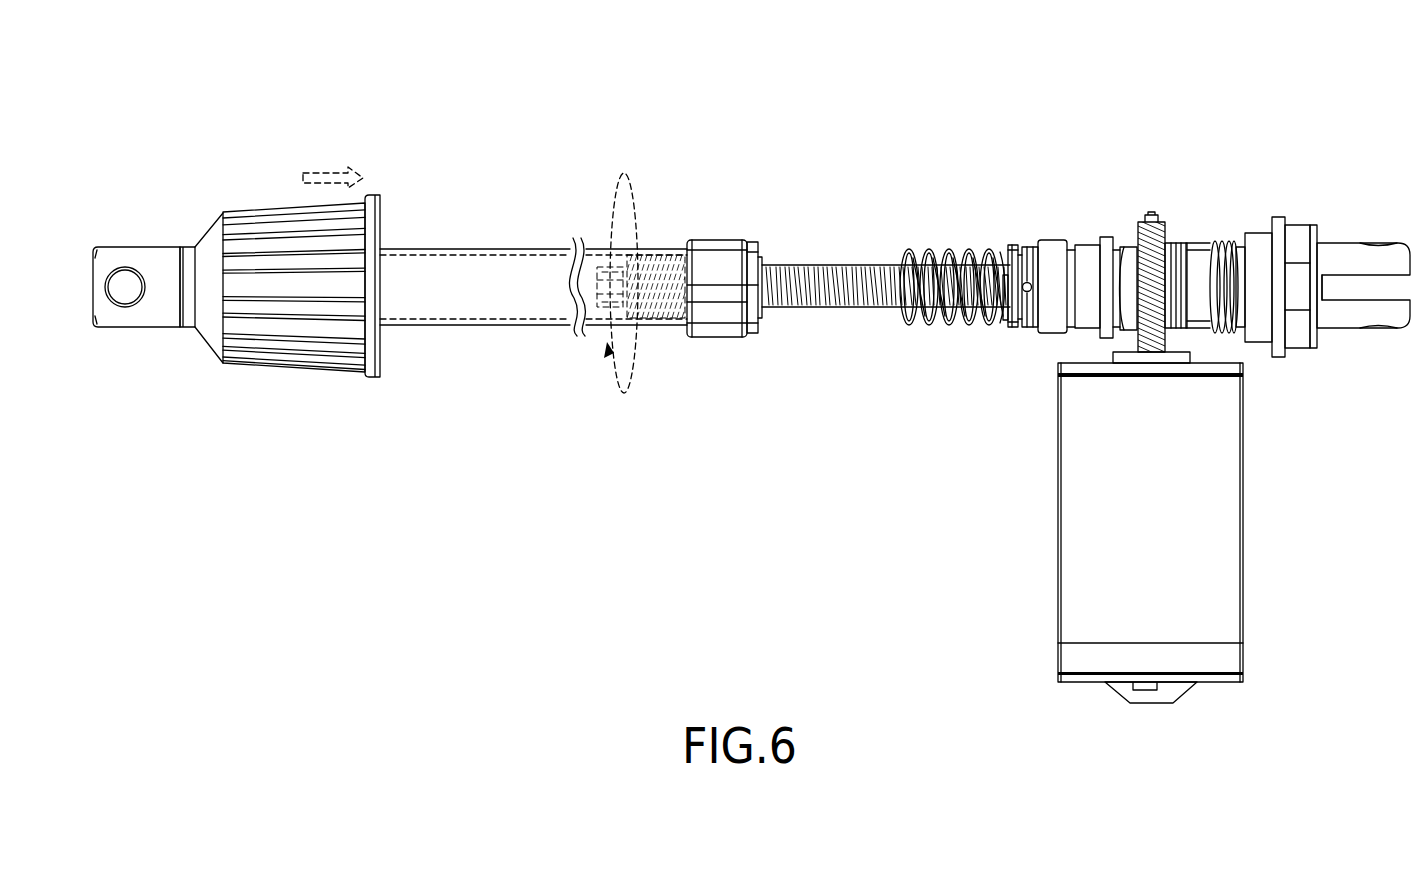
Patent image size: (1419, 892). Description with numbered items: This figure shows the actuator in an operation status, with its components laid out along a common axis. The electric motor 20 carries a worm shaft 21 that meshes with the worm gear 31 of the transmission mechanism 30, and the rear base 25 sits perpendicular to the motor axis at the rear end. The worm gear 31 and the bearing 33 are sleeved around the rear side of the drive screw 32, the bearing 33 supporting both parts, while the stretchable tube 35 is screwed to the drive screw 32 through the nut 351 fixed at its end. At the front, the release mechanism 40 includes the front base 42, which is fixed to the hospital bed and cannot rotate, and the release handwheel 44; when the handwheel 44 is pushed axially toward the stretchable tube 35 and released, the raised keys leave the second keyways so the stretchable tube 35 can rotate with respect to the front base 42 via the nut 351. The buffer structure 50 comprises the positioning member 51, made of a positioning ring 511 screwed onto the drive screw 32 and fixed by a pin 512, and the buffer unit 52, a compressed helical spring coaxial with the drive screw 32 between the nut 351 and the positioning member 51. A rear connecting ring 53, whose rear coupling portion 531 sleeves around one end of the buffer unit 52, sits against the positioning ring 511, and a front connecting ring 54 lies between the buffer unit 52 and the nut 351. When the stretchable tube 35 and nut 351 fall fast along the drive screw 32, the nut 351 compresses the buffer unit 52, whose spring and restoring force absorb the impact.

The electric motor 20 is at (1215, 485).
The worm shaft 21 is at (1148, 215).
The rear base 25 is at (1333, 253).
The transmission mechanism 30 is at (545, 240).
The worm gear 31 is at (1163, 237).
The drive screw 32 is at (833, 308).
The bearing 33 is at (1057, 250).
The stretchable tube 35 is at (515, 248).
The nut 351 is at (708, 245).
The release mechanism 40 is at (243, 203).
The front base 42 is at (143, 258).
The release handwheel 44 is at (292, 240).
The buffer structure 50 is at (932, 167).
The positioning member 51 is at (1027, 250).
The positioning ring 511 is at (1010, 317).
The pin 512 is at (1030, 297).
The buffer unit 52 is at (950, 253).
The rear connecting ring 53 is at (1017, 243).
The rear coupling portion 531 is at (1008, 250).
The front connecting ring 54 is at (750, 242).